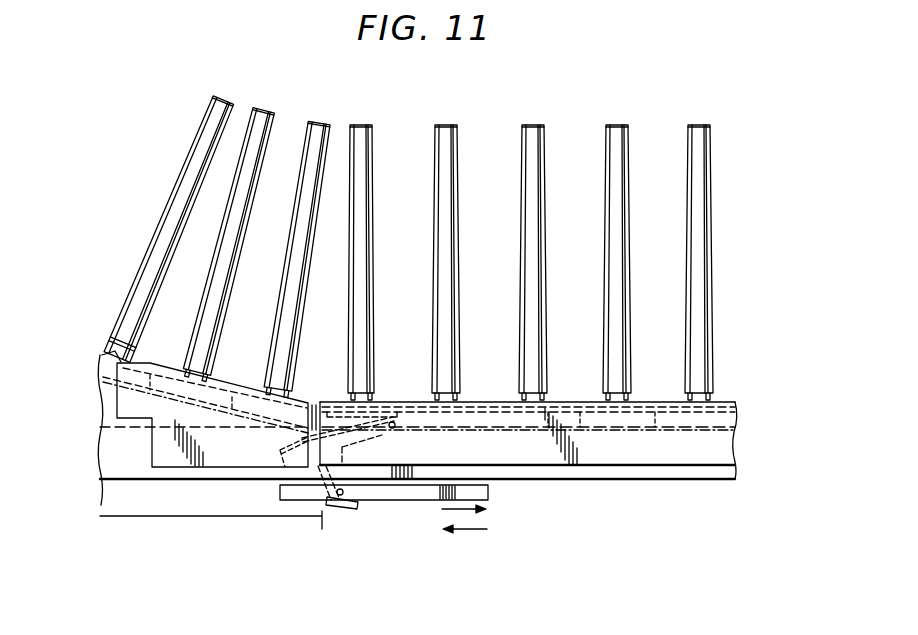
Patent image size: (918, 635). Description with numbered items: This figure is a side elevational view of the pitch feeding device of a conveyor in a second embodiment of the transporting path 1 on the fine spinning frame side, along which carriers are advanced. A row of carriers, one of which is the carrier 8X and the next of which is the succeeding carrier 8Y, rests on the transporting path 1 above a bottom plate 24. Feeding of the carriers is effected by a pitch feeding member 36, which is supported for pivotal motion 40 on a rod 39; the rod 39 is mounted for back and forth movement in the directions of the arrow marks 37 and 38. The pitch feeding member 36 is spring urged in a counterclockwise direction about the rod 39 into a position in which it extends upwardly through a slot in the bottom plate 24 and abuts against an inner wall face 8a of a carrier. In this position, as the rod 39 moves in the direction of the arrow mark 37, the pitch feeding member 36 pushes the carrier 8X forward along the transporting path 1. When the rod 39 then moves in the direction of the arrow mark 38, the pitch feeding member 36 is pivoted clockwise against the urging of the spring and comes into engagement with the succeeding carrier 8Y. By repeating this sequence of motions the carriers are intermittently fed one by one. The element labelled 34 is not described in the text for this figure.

The transporting path 1 is at (651, 443).
The blade / key element 34 is at (447, 143).
The succeeding carrier 8Y is at (262, 413).
The carrier 8X is at (334, 400).
The inner wall face 8a is at (393, 420).
The bottom plate 24 is at (555, 430).
The pitch feeding member 36 is at (387, 466).
The arrow mark 37 is at (468, 511).
The arrow mark 38 is at (468, 531).
The rod 39 is at (428, 500).
The pivotal motion 40 is at (346, 506).